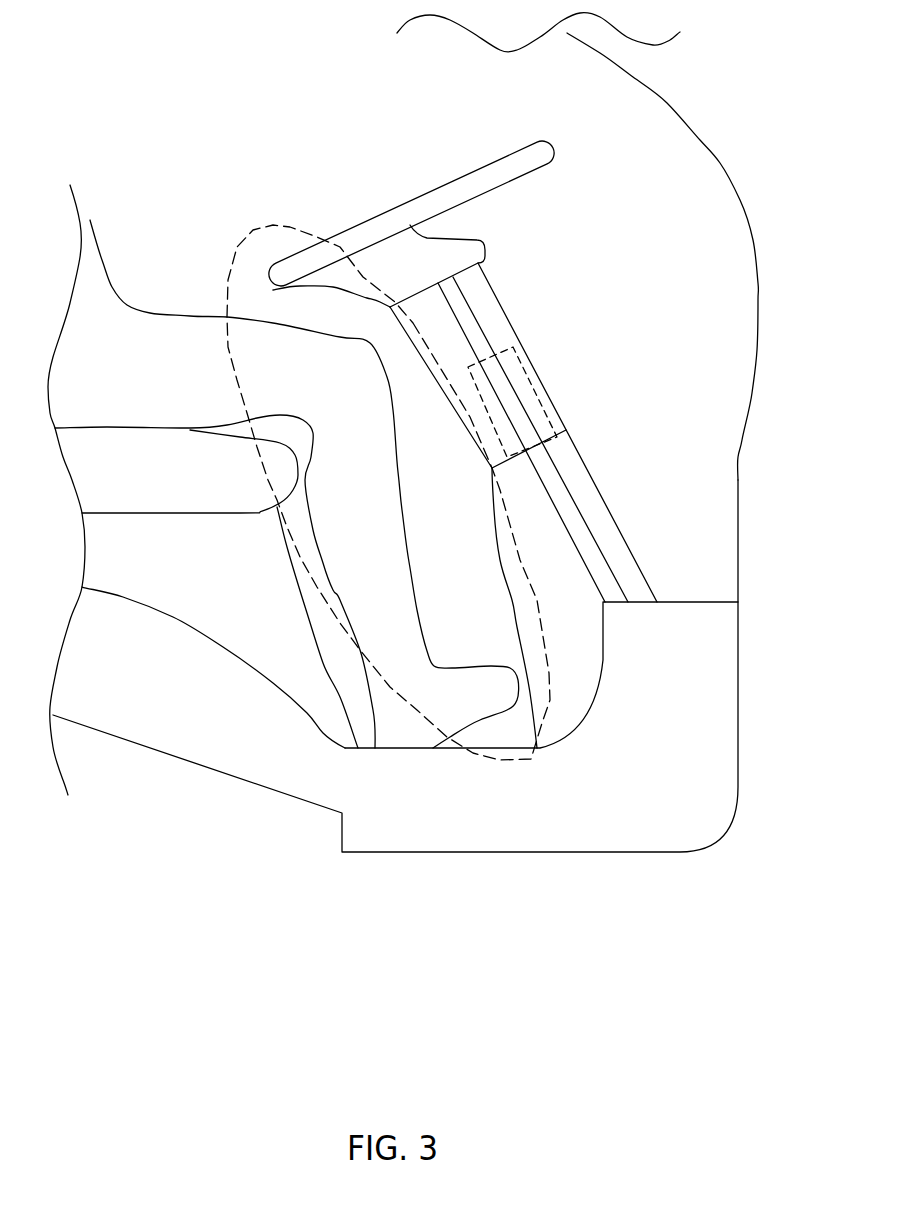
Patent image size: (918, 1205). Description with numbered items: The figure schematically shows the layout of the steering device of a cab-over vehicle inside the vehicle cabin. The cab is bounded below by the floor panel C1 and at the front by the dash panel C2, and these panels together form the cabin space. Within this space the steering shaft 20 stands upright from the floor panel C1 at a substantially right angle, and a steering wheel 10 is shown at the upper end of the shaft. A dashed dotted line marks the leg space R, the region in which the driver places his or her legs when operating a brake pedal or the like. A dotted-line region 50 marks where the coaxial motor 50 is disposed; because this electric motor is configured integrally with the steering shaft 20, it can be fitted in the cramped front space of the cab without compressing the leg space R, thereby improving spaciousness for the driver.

The operating lever 10 is at (550, 135).
The steering shaft 20 is at (557, 457).
The coaxial motor 50 is at (517, 357).
The leg space R is at (273, 223).
The floor panel C1 is at (207, 768).
The dash panel C2 is at (720, 162).